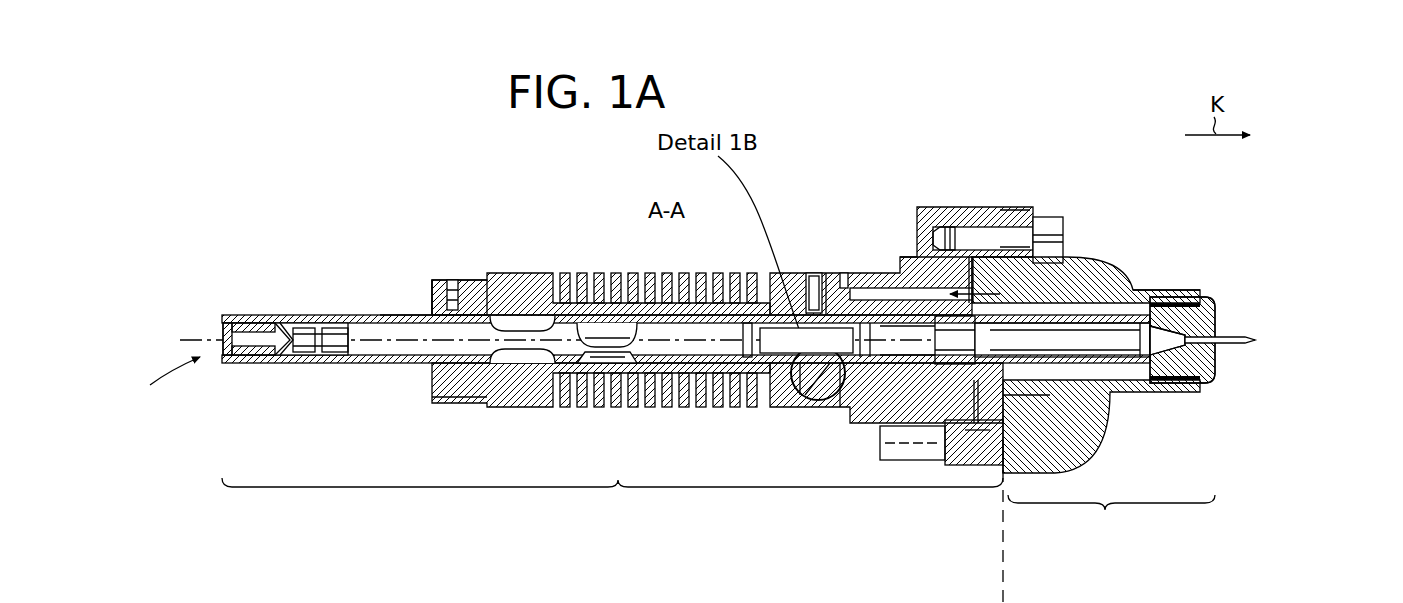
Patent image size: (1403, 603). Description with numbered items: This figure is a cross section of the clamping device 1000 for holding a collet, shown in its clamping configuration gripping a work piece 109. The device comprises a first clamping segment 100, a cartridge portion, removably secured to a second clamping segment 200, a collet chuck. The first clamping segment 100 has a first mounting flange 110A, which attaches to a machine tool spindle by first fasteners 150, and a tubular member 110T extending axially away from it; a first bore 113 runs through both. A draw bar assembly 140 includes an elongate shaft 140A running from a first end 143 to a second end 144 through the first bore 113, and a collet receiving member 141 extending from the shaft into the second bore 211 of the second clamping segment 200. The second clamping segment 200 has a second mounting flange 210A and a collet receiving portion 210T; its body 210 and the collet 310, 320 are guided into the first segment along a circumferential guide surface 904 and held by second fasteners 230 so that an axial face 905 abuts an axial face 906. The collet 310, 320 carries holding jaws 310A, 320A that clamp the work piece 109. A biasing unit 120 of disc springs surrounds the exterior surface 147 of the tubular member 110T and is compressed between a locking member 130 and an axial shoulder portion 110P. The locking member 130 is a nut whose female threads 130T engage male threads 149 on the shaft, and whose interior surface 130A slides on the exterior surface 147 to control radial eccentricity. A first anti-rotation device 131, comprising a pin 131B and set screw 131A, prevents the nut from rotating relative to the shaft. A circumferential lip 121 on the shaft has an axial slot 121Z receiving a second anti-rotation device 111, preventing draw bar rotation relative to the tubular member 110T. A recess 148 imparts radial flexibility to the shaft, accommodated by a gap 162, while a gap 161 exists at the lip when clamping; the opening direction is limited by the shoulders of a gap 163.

The clamping device 1000 is at (890, 126).
The first clamping segment 100 is at (612, 506).
The second clamping segment 200 is at (1109, 536).
The work piece 109 is at (1237, 338).
The first mounting flange 110A is at (963, 195).
The tubular member 110T is at (858, 282).
The portion of first clamping segment 110P is at (728, 405).
The second anti-rotation device 111 is at (826, 280).
The first bore 113 is at (955, 262).
The biasing unit 120 is at (665, 272).
The circumferential lip 121 is at (840, 395).
The axial slot 121Z is at (844, 275).
The locking member 130 is at (522, 318).
The interior surface 130A is at (510, 408).
The female threads 130T is at (432, 405).
The first anti-rotation device 131 is at (455, 273).
The set screw 131A is at (447, 280).
The pin 131B is at (432, 283).
The draw bar assembly 140 is at (616, 405).
The elongate shaft 140A is at (250, 314).
The collet receiving member 141 is at (887, 258).
The first end 143 is at (161, 387).
The second end 144 is at (808, 275).
The exterior surface 147 is at (530, 372).
The recess 148 is at (555, 272).
The male threads 149 is at (395, 314).
The first fastener 150 is at (893, 456).
The gap 161 is at (800, 392).
The gap 162 is at (815, 402).
The gap 163 is at (985, 392).
The second clamping segment body 210 is at (1075, 397).
The second mounting flange 210A is at (1020, 455).
The collet receiving portion 210T is at (1163, 252).
The second bore 211 is at (1172, 302).
The second fastener 230 is at (1068, 225).
The collet 310 is at (1207, 303).
The collet 320 is at (1182, 340).
The holding jaws 310A is at (1207, 365).
The holding jaws 320A is at (1167, 340).
The circumferential guide surface 904 is at (1010, 250).
The axial face 905 is at (972, 430).
The axial face 906 is at (1037, 215).